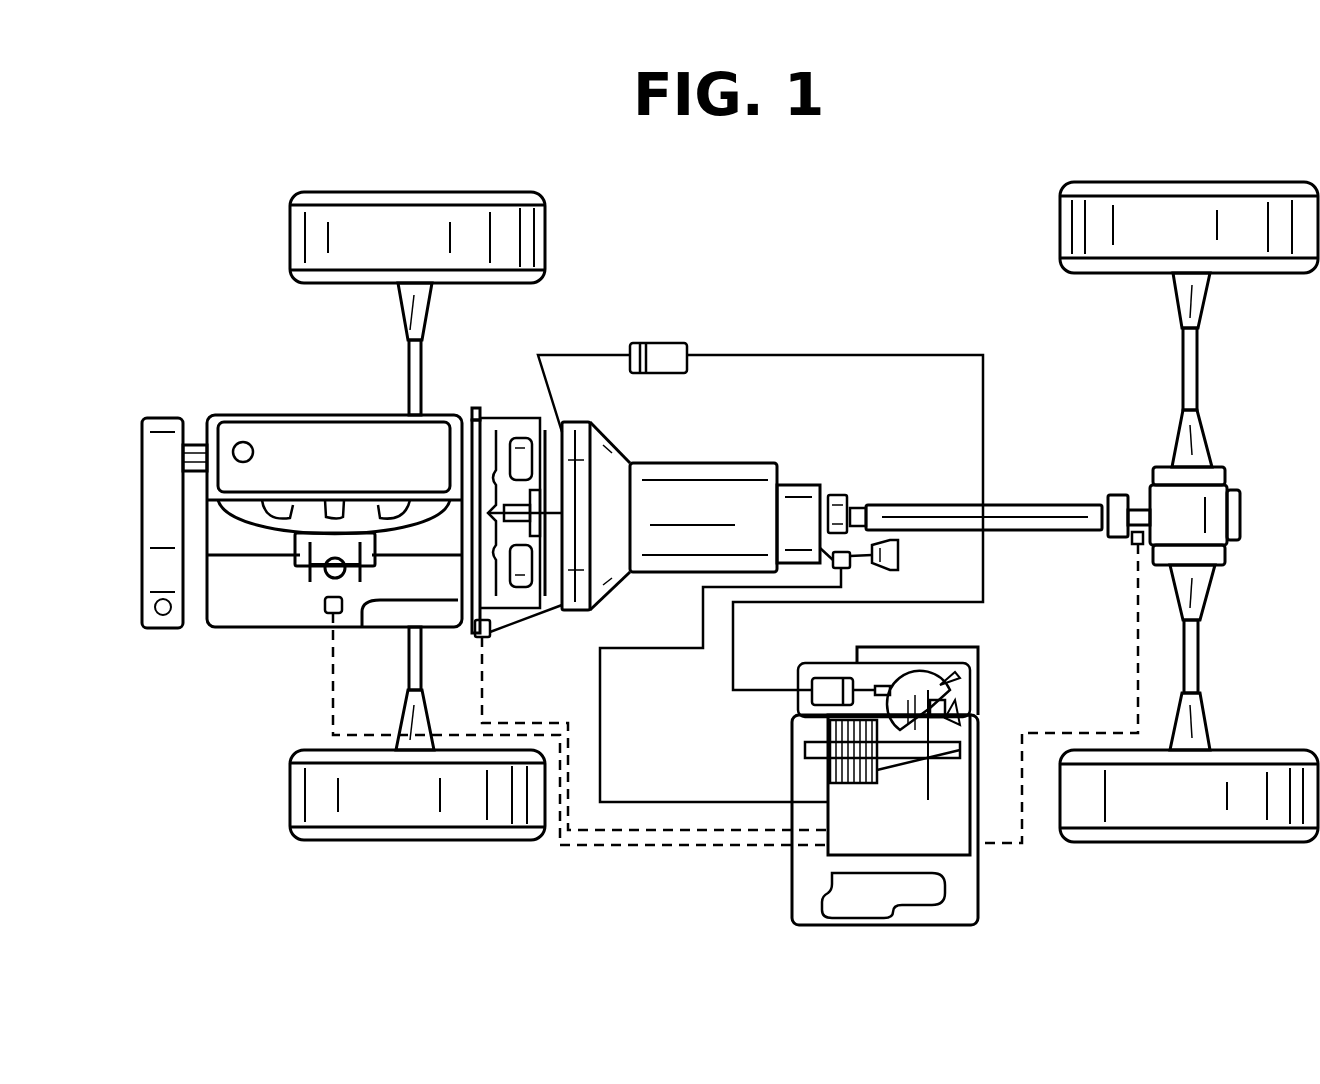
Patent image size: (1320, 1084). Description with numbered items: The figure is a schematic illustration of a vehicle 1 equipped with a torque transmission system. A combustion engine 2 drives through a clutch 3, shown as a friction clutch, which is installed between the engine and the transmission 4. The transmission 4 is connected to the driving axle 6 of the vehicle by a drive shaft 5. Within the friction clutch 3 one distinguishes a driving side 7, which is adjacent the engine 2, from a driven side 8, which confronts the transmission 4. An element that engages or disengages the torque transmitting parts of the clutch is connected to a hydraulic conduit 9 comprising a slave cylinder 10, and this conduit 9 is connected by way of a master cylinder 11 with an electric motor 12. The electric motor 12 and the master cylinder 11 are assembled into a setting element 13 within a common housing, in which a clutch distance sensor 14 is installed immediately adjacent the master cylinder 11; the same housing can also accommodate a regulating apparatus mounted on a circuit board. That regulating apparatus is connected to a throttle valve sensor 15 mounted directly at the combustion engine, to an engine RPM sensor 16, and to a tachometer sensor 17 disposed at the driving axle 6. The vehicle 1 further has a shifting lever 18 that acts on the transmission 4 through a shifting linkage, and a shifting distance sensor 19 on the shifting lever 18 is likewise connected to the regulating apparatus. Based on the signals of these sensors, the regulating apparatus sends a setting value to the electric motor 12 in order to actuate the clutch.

The vehicle 1 is at (801, 268).
The combustion engine 2 is at (280, 445).
The clutch 3 is at (498, 455).
The transmission 4 is at (688, 480).
The drive shaft 5 is at (1050, 515).
The driving axle 6 is at (1199, 661).
The driving side 7 is at (470, 455).
The driven side 8 is at (562, 432).
The hydraulic conduit 9 is at (813, 355).
The slave cylinder 10 is at (656, 355).
The master cylinder 11 is at (824, 690).
The electric motor 12 is at (830, 773).
The setting element 13 is at (800, 906).
The clutch distance sensor 14 is at (937, 705).
The throttle valve sensor 15 is at (333, 604).
The engine RPM sensor 16 is at (492, 635).
The tachometer sensor 17 is at (1132, 540).
The shifting lever 18 is at (846, 520).
The shifting distance sensor 19 is at (852, 567).